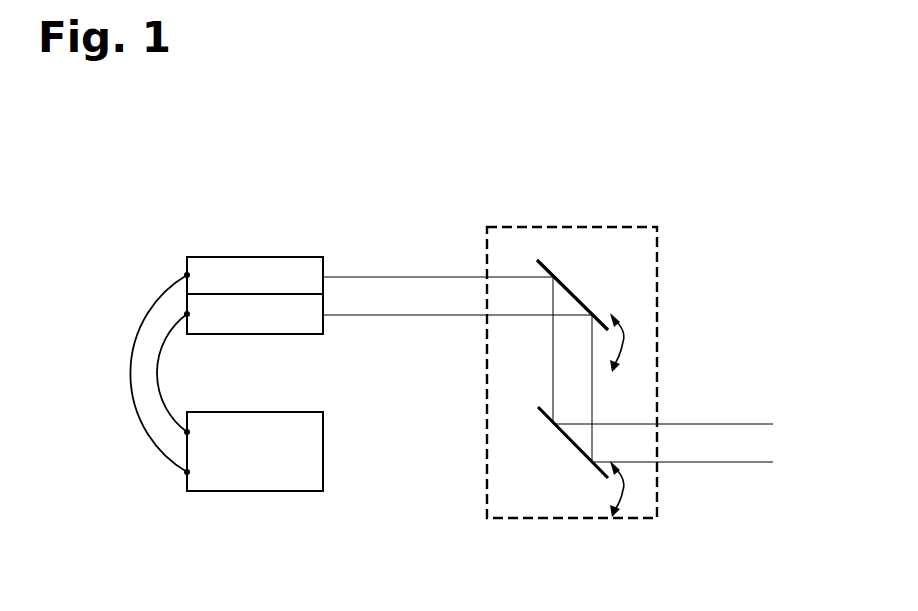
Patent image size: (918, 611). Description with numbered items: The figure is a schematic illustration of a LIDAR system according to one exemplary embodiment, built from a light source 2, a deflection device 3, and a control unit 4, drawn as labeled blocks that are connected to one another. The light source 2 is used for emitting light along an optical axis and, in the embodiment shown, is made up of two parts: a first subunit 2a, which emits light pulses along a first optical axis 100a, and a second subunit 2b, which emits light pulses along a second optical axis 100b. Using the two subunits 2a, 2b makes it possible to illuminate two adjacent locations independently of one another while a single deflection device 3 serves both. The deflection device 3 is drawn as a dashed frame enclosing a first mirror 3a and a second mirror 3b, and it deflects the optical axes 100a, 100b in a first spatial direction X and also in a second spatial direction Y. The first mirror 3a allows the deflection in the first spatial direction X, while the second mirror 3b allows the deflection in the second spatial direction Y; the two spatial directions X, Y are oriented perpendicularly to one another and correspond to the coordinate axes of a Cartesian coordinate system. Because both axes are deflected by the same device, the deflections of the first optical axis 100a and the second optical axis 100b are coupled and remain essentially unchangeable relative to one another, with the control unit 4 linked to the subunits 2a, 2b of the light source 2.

The light source 2 is at (226, 355).
The first subunit 2a is at (254, 258).
The second subunit 2b is at (255, 334).
The deflection device 3 is at (571, 227).
The first mirror 3a is at (537, 262).
The second mirror 3b is at (538, 408).
The control unit 4 is at (254, 491).
The first spatial direction X is at (623, 342).
The second spatial direction Y is at (623, 490).
The first optical axis 100a is at (720, 424).
The second optical axis 100b is at (720, 462).